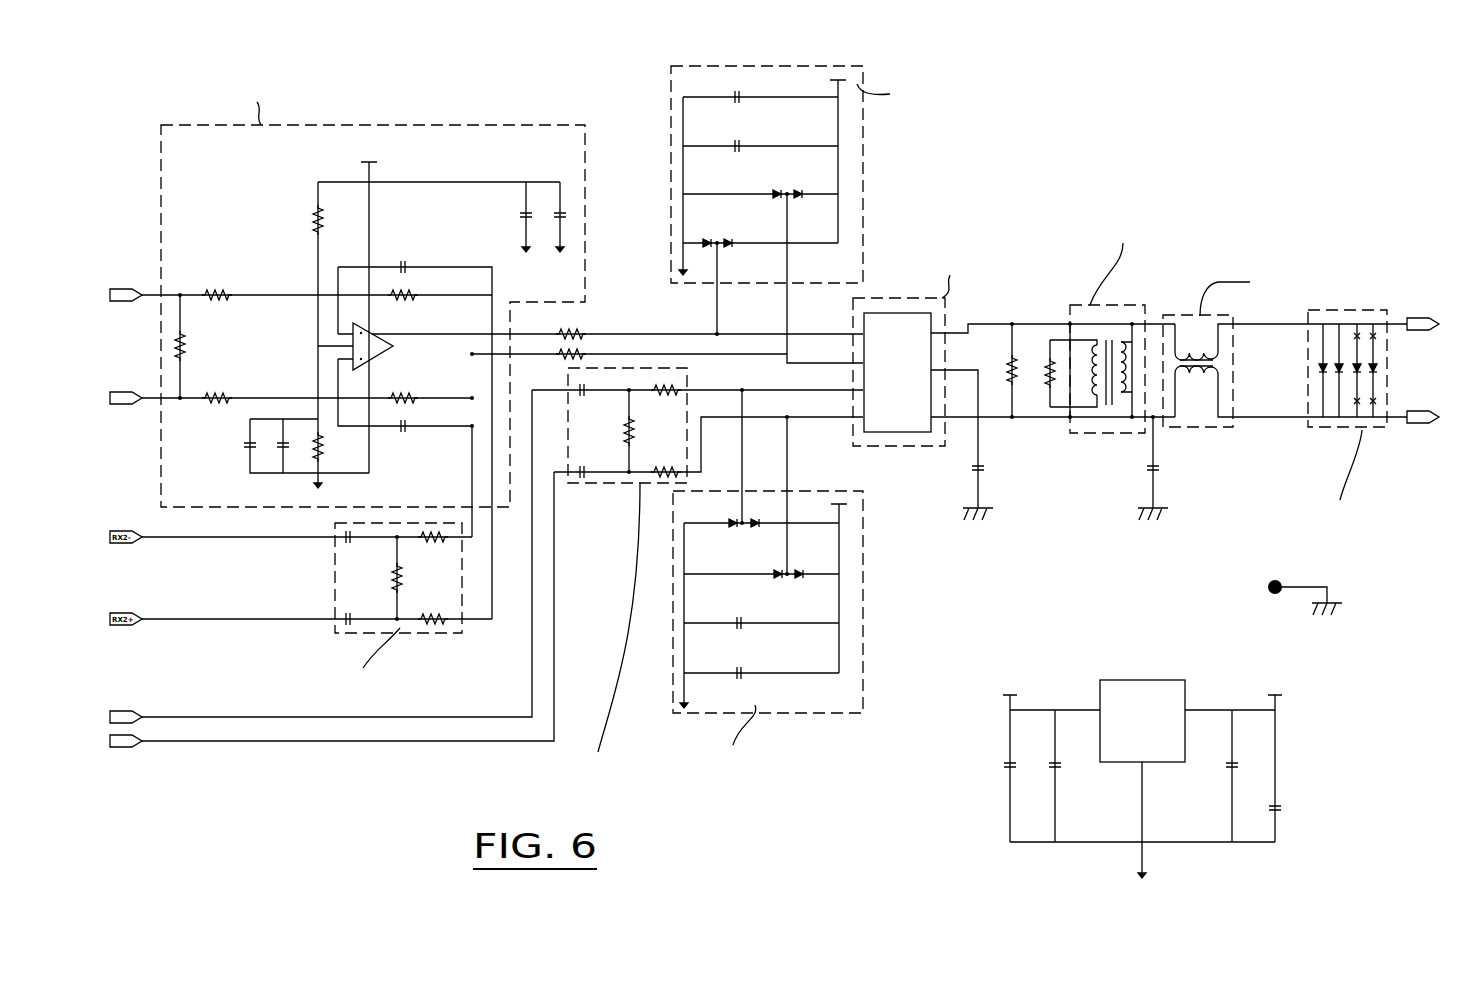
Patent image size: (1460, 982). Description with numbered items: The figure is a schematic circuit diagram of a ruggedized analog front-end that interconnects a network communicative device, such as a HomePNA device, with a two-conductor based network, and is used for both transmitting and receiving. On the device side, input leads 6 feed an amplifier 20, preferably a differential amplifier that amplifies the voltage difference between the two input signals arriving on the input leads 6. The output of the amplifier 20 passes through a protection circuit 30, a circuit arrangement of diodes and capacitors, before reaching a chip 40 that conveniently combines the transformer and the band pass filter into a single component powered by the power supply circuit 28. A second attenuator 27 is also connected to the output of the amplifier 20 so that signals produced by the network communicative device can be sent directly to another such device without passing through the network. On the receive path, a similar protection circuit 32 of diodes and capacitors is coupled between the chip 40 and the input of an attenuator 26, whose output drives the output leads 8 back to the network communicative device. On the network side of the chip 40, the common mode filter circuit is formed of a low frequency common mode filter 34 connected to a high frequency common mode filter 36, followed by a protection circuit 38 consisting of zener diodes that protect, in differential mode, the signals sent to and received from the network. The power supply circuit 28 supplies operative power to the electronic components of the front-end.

The input leads 6 is at (127, 303).
The output leads 8 is at (140, 722).
The amplifier 20 is at (512, 125).
The attenuator 26 is at (625, 484).
The second attenuator 27 is at (335, 583).
The power supply circuit 28 is at (966, 848).
The protection circuit 30 is at (857, 124).
The protection circuit 32 is at (840, 713).
The low frequency common mode filter 34 is at (1080, 433).
The high frequency common mode filter 36 is at (1200, 427).
The protection circuit 38 is at (1318, 430).
The chip 40 is at (920, 446).